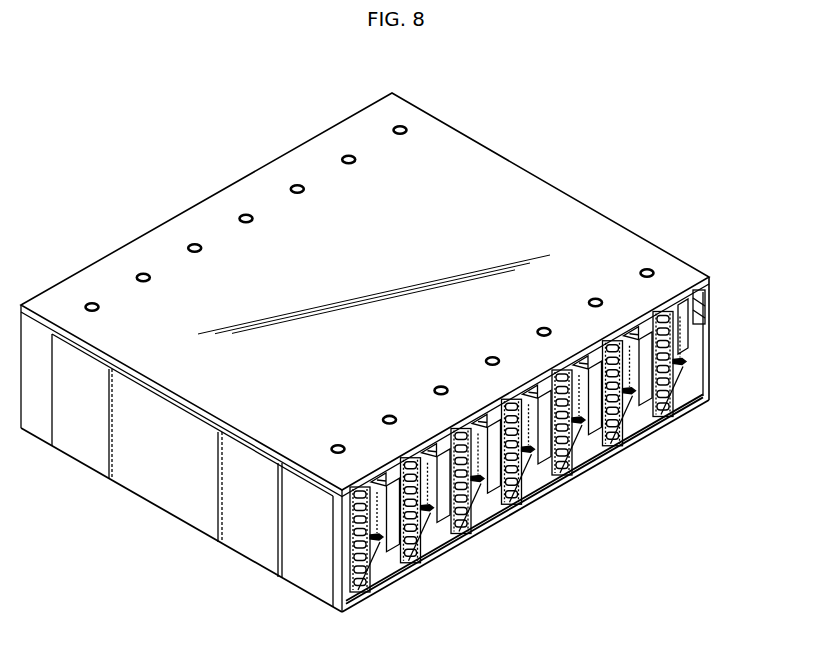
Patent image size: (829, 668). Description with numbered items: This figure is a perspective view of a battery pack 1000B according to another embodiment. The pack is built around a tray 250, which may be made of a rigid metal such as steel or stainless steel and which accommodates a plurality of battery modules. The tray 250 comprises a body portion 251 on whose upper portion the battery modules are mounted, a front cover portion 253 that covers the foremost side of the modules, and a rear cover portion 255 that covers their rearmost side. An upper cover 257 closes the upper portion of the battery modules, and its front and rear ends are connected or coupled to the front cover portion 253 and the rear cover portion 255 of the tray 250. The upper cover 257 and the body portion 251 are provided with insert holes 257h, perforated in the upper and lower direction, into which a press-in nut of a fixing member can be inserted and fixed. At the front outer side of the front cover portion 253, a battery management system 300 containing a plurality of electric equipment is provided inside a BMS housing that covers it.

The battery pack 1000B is at (148, 85).
The upper cover 257 is at (563, 185).
The insert hole 257h is at (138, 274).
The battery management system 300 is at (158, 514).
The rear cover portion 255 is at (713, 347).
The body portion 251 is at (547, 495).
The front cover portion 253 is at (363, 570).
The tray 250 is at (572, 474).